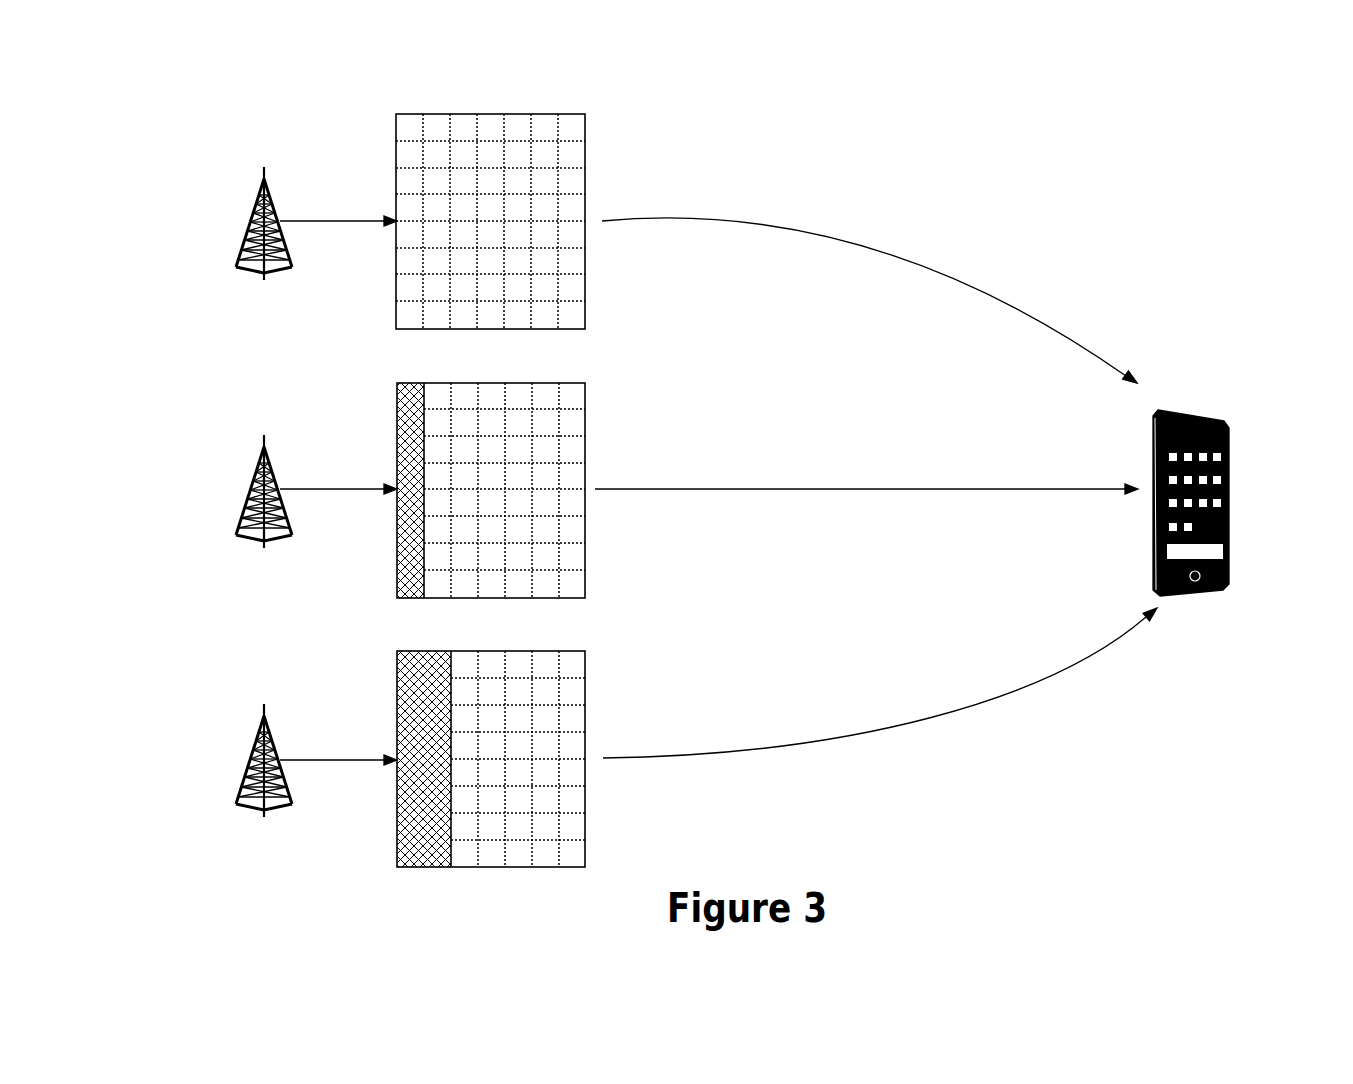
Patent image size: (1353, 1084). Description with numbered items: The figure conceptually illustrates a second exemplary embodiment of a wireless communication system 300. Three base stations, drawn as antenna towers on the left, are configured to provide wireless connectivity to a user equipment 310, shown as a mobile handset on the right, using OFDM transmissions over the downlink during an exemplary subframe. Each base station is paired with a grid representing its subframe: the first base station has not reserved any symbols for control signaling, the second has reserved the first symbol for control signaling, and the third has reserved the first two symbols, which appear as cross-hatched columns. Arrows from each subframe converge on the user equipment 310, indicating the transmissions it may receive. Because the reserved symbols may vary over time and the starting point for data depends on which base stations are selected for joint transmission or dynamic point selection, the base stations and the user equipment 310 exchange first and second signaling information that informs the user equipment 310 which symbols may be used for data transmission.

The wireless communication system 300 is at (1168, 148).
The user equipment 310 is at (1232, 527).